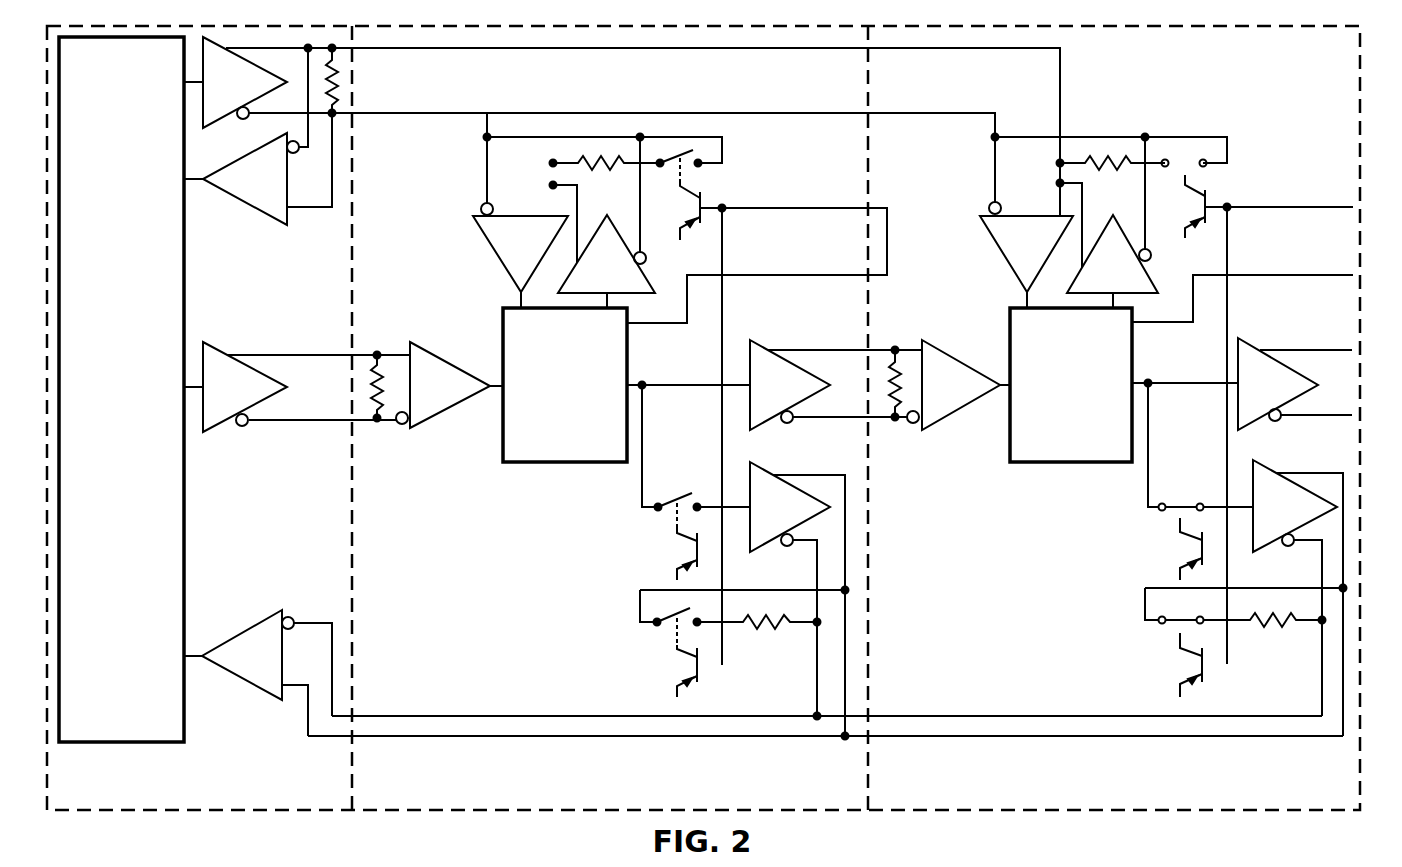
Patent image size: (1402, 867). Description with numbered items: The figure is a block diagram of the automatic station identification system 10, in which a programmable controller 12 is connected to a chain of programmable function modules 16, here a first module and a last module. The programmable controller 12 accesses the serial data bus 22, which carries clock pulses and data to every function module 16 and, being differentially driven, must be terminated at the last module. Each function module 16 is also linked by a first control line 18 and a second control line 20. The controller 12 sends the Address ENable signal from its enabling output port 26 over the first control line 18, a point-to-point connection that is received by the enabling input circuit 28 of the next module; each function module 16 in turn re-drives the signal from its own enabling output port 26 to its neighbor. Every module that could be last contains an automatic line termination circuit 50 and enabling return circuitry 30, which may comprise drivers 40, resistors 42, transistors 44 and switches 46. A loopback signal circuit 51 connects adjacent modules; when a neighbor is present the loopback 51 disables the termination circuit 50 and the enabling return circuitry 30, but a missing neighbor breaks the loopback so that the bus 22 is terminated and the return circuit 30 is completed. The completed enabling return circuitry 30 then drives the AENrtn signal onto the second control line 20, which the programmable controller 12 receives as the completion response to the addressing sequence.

The automatic station identification system 10 is at (371, 817).
The programmable controller 12 is at (195, 813).
The programmable function module 16 is at (520, 813).
The first control line 18 is at (305, 355).
The second control line 20 is at (1055, 736).
The serial data bus 22 is at (795, 50).
The enabling output port 26 is at (215, 430).
The enabling input circuit 28 is at (420, 430).
The enabling return circuitry 30 is at (575, 577).
The driver 40 is at (757, 548).
The resistor 42 is at (760, 628).
The transistor 44 is at (692, 197).
The switch 46 is at (672, 152).
The automatic line termination circuit 50 is at (738, 167).
The loopback signal circuit 51 is at (887, 227).